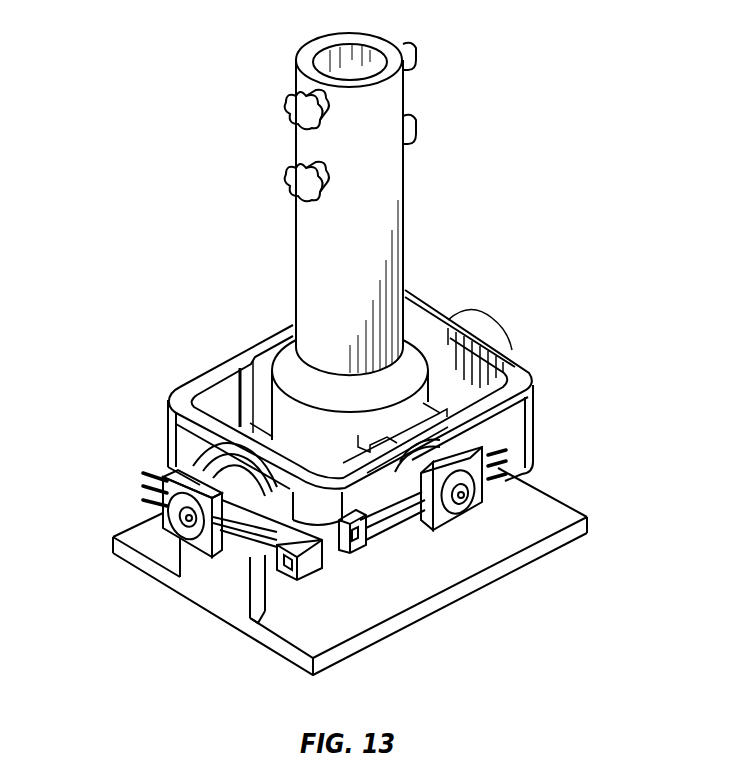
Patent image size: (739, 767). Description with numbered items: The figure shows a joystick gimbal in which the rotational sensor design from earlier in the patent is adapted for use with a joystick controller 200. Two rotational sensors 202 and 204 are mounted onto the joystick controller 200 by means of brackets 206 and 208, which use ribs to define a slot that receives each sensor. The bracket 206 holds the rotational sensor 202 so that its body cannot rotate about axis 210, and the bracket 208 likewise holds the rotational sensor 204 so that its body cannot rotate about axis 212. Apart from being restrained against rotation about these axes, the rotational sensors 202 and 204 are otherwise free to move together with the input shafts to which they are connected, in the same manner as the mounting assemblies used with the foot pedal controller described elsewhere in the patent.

The joystick controller 200 is at (490, 97).
The rotational sensor 202 is at (140, 485).
The rotational sensor 204 is at (455, 503).
The bracket 206 is at (300, 570).
The bracket 208 is at (358, 537).
The axis 210 is at (108, 568).
The axis 212 is at (572, 549).